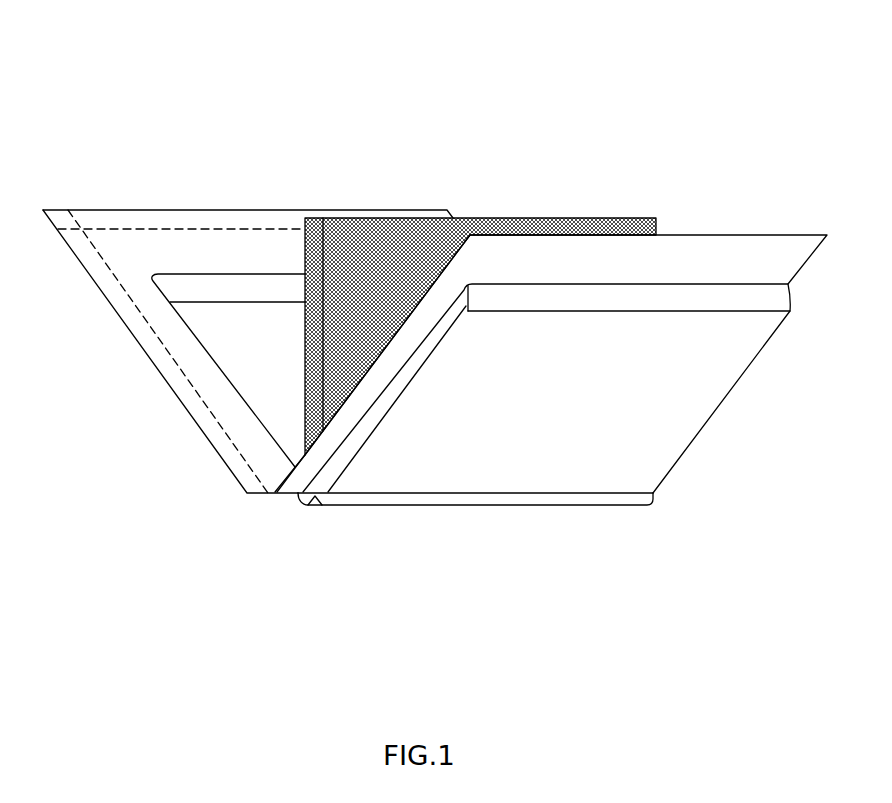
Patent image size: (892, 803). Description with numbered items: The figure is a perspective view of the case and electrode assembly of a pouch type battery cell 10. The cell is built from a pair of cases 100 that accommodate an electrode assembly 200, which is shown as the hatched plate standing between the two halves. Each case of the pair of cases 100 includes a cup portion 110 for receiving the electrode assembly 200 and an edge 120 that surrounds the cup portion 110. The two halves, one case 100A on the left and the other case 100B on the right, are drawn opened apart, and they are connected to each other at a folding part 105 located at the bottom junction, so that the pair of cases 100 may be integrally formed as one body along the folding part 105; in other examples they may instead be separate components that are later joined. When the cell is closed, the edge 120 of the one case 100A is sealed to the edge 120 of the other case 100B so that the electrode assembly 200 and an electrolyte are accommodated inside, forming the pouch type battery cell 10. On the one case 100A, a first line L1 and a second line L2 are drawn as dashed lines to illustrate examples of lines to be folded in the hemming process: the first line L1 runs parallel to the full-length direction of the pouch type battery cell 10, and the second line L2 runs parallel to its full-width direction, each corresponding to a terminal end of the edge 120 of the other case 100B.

The pouch type battery cell 10 is at (178, 37).
The pair of cases 100 is at (435, 366).
The one case 100A is at (248, 336).
The other case 100B is at (552, 415).
The folding part 105 is at (315, 500).
The cup portion 110 is at (247, 330).
The edge 120 is at (120, 242).
The electrode assembly 200 is at (380, 233).
The first line L1 is at (182, 228).
The second line L2 is at (155, 332).